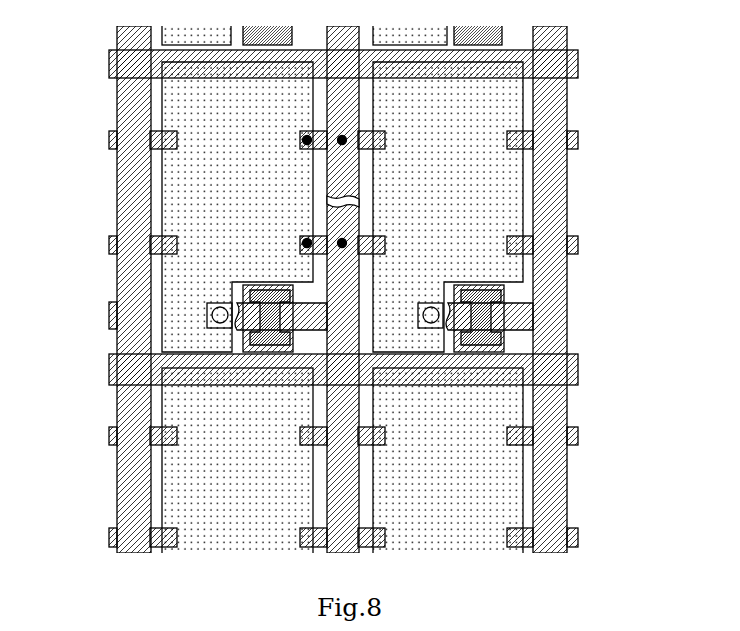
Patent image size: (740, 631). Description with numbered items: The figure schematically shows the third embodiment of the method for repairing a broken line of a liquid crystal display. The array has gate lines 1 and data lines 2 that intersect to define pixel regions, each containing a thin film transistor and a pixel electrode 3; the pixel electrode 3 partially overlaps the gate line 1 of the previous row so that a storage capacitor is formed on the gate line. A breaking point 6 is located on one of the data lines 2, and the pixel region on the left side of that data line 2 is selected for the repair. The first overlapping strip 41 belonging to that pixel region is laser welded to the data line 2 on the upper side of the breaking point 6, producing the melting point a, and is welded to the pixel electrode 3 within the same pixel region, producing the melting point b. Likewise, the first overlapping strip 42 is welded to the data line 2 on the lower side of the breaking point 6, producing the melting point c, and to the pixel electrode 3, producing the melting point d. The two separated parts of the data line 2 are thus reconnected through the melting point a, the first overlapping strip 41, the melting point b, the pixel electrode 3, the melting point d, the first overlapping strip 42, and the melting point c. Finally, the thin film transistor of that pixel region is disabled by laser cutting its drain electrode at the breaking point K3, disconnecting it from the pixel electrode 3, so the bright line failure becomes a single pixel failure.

The gate line 1 is at (177, 363).
The data line 2 is at (547, 208).
The pixel electrode 3 is at (188, 210).
The breaking point 6 is at (345, 200).
The first overlapping strip 41 is at (318, 140).
The first overlapping strip 42 is at (320, 248).
The breaking point of the drain electrode K3 is at (232, 308).
The melting point a is at (342, 140).
The melting point b is at (307, 140).
The melting point c is at (342, 243).
The melting point d is at (307, 243).